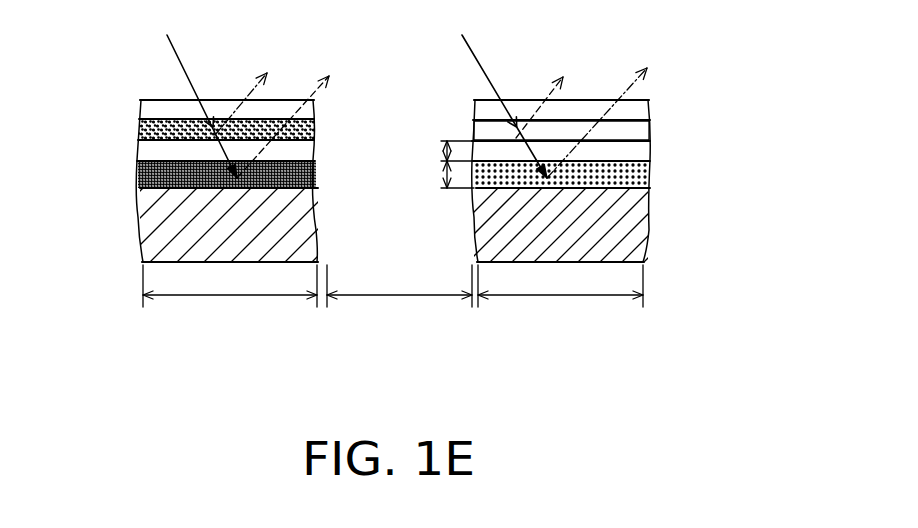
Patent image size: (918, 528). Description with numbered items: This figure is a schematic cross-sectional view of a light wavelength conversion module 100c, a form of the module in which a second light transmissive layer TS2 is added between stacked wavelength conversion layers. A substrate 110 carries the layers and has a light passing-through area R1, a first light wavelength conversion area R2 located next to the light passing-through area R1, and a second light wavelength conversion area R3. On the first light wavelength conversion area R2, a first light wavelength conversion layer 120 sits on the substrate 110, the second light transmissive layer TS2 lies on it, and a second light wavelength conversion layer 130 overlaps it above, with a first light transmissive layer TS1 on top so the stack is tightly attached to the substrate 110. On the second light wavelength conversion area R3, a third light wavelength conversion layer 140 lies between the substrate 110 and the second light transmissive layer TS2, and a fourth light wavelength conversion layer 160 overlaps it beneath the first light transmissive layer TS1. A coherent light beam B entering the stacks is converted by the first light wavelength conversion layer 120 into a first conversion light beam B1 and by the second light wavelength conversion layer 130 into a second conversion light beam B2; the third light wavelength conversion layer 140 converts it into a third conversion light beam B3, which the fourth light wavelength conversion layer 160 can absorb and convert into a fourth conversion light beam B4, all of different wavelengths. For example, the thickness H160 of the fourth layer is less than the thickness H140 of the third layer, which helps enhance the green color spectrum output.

The light wavelength conversion module 100c is at (447, 181).
The substrate 110 is at (162, 226).
The first light wavelength conversion layer 120 is at (160, 175).
The second light wavelength conversion layer 130 is at (155, 128).
The third light wavelength conversion layer 140 is at (635, 176).
The fourth light wavelength conversion layer 160 is at (637, 132).
The first light transmissive layer TS1 is at (155, 110).
The second light transmissive layer TS2 is at (157, 148).
The coherent light beam B is at (352, 89).
The first conversion light beam B1 is at (296, 111).
The second conversion light beam B2 is at (241, 87).
The third conversion light beam B3 is at (445, 85).
The fourth conversion light beam B4 is at (605, 107).
The light passing-through area R1 is at (399, 303).
The first light wavelength conversion area R2 is at (230, 303).
The second light wavelength conversion area R3 is at (560, 303).
The thickness of the fourth light wavelength conversion layer H160 is at (423, 144).
The thickness of the third light wavelength conversion layer H140 is at (423, 172).